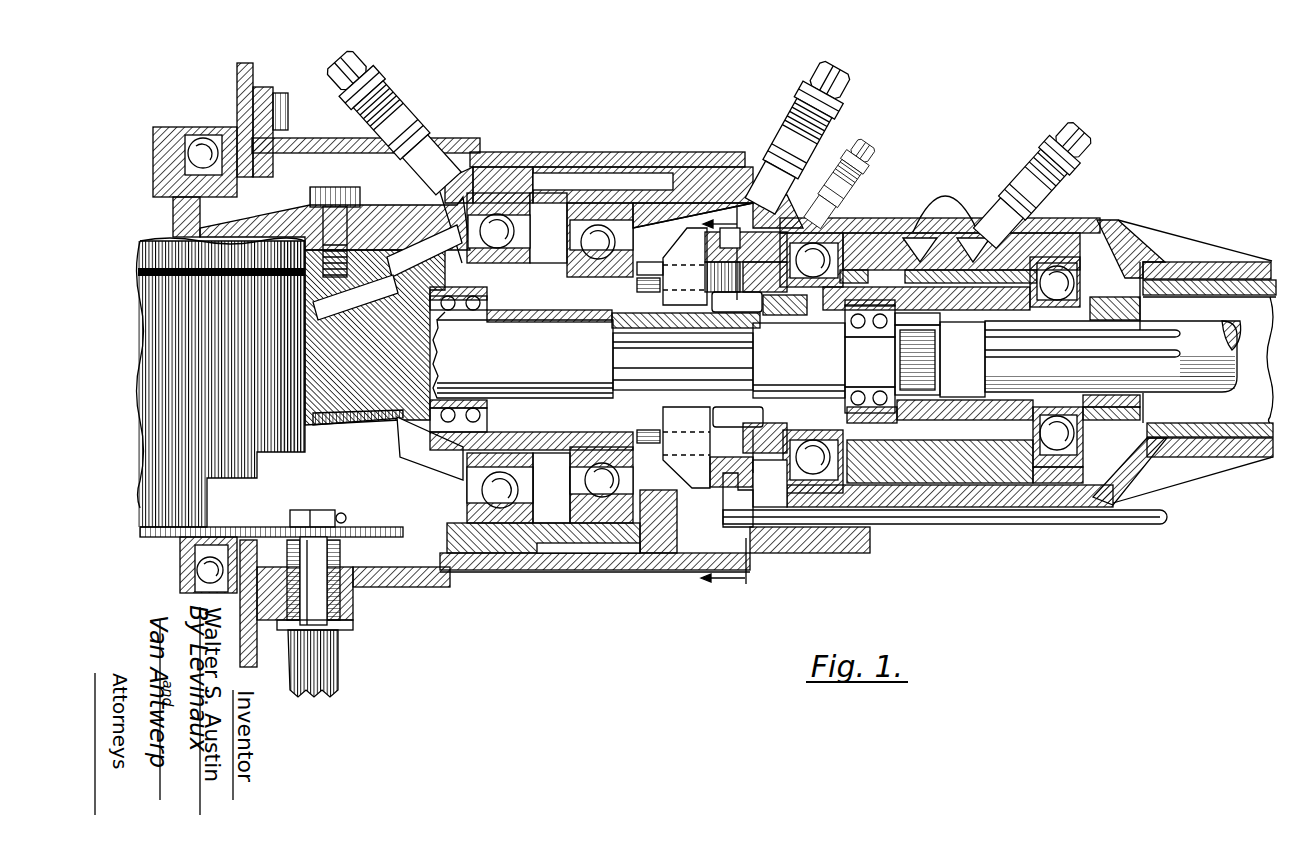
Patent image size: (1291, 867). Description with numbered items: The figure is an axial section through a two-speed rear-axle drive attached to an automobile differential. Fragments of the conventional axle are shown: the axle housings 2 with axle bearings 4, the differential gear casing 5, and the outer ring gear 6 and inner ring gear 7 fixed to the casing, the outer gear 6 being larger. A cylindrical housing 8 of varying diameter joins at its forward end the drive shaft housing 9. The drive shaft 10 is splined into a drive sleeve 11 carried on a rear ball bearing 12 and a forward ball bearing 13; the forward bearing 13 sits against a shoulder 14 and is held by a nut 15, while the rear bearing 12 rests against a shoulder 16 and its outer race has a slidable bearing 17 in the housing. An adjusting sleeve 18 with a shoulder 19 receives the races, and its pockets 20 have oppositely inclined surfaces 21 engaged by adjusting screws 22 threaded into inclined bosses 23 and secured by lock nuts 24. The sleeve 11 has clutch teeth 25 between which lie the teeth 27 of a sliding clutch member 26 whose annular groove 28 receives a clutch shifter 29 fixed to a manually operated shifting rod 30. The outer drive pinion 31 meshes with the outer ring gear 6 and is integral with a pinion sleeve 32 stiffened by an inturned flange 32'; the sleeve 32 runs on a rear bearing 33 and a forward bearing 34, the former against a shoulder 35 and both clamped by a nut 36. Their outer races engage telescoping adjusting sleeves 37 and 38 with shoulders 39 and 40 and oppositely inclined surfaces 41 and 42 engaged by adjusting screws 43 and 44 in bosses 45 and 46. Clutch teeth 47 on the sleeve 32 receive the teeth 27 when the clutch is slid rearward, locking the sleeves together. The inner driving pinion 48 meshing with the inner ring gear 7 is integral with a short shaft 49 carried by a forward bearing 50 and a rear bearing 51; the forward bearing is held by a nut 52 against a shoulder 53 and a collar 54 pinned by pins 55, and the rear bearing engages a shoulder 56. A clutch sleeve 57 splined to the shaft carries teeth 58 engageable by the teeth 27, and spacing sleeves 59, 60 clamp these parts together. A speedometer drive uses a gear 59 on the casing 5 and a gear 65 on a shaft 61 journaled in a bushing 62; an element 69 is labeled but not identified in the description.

The axle housings 2 is at (238, 78).
The axle bearings 4 is at (205, 150).
The differential gear casing 5 is at (160, 413).
The outer spiral bevel ring gear 6 is at (420, 235).
The inner spiral bevel ring gear 7 is at (340, 262).
The cylindrical housing 8 is at (320, 140).
The drive shaft housing 9 is at (1250, 440).
The drive shaft 10 is at (1198, 345).
The drive sleeve 11 is at (975, 470).
The rear ball bearing 12 is at (850, 200).
The forward ball bearing 13 is at (1065, 282).
The shoulder 14 is at (1000, 440).
The nut 15 is at (1092, 422).
The shoulder 16 is at (790, 290).
The longitudinally slidable bearing 17 is at (812, 255).
The adjusting sleeve 18 is at (935, 462).
The shoulder 19 is at (1022, 470).
The pockets 20 is at (897, 240).
The inclined bottom surfaces 21 is at (945, 202).
The adjusting screws 22 is at (1055, 150).
The inclined bosses 23 is at (1062, 195).
The lock nuts 24 is at (385, 72).
The clutch teeth 25 is at (663, 270).
The sliding clutch member 26 is at (755, 460).
The clutch teeth 27 is at (686, 358).
The annular groove 28 is at (745, 240).
The clutch shifter 29 is at (735, 497).
The shifting rod 30 is at (870, 527).
The outer drive pinion 31 is at (435, 462).
The pinion sleeve 32 is at (531, 425).
The inturned integral flange 32' is at (355, 376).
The rear ball bearing 33 is at (500, 230).
The forward ball bearing 34 is at (575, 243).
The shoulder 35 is at (455, 215).
The nut 36 is at (551, 488).
The adjusting sleeve 37 is at (520, 170).
The adjusting sleeve 38 is at (690, 180).
The shoulder 39 is at (478, 190).
The shoulder 40 is at (650, 215).
The inclined surface 41 is at (443, 148).
The inclined surface 42 is at (738, 170).
The adjusting screw 43 is at (415, 118).
The adjusting screw 44 is at (780, 140).
The boss 45 is at (432, 135).
The boss 46 is at (760, 155).
The clutch teeth 47 is at (655, 435).
The inner driving pinion 48 is at (357, 400).
The short shaft 49 is at (664, 359).
The forward ball bearing 50 is at (925, 320).
The rear ball bearing 51 is at (490, 302).
The nut 52 is at (920, 357).
The shoulder 53 is at (895, 410).
The collar 54 is at (850, 420).
The pins 55 is at (855, 296).
The shoulder 56 is at (445, 320).
The clutch sleeve 57 is at (657, 325).
The clutch teeth 58 is at (737, 359).
The speedometer drive gear 59 is at (208, 528).
The spacing sleeve 60 is at (812, 333).
The shaft 61 is at (340, 608).
The bushing 62 is at (342, 553).
The gear 65 is at (268, 524).
The sleeve 69 is at (590, 312).